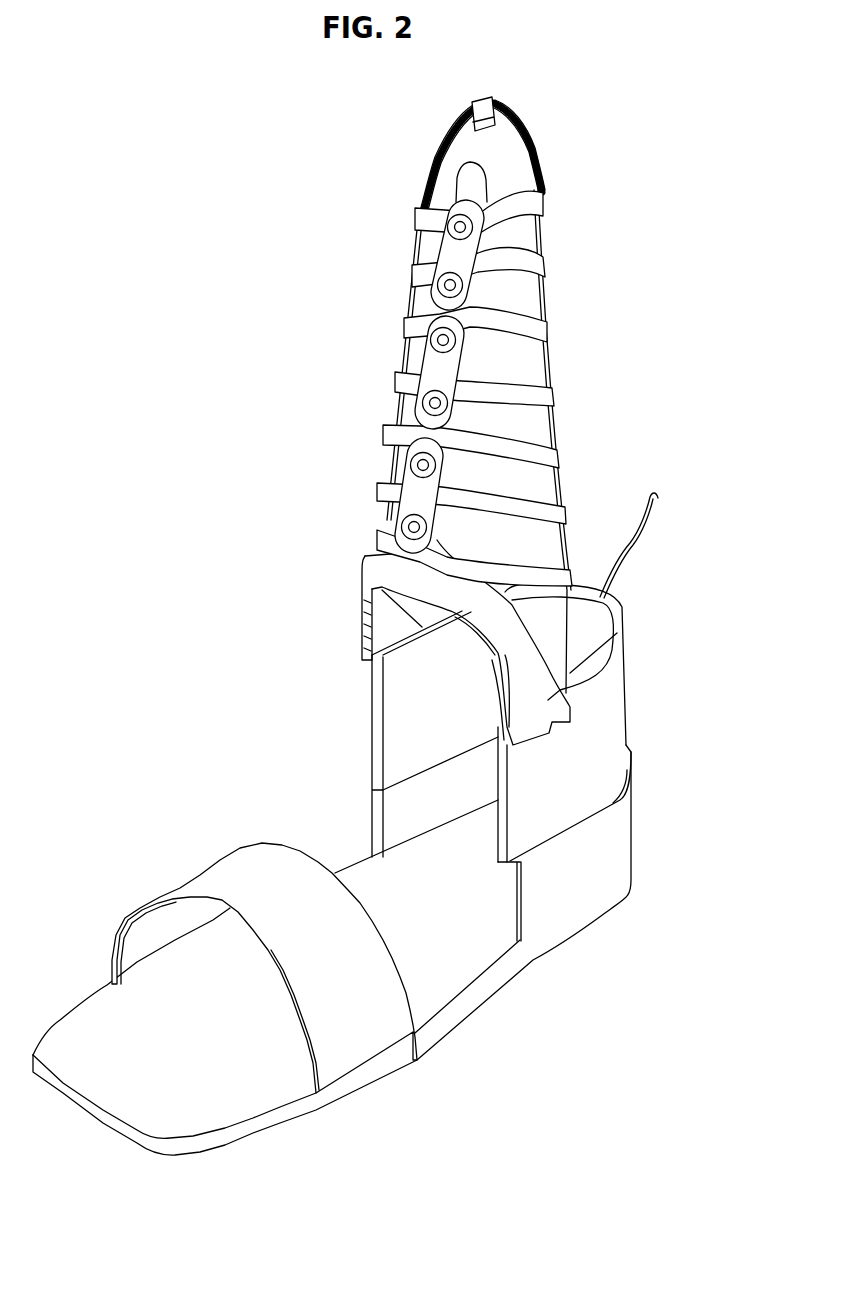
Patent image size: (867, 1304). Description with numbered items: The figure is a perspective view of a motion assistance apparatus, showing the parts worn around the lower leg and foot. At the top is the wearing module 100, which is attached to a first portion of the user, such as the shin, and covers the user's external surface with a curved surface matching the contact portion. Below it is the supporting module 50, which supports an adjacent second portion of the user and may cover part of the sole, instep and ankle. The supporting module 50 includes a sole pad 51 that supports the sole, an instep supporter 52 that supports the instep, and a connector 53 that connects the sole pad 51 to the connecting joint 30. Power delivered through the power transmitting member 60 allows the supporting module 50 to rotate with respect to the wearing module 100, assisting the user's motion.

The wearing module 100 is at (429, 161).
The power transmitting member 60 is at (640, 545).
The connecting joint 30 is at (627, 697).
The supporting module 50 is at (536, 960).
The sole pad 51 is at (433, 967).
The instep supporter 52 is at (213, 889).
The connector 53 is at (613, 848).